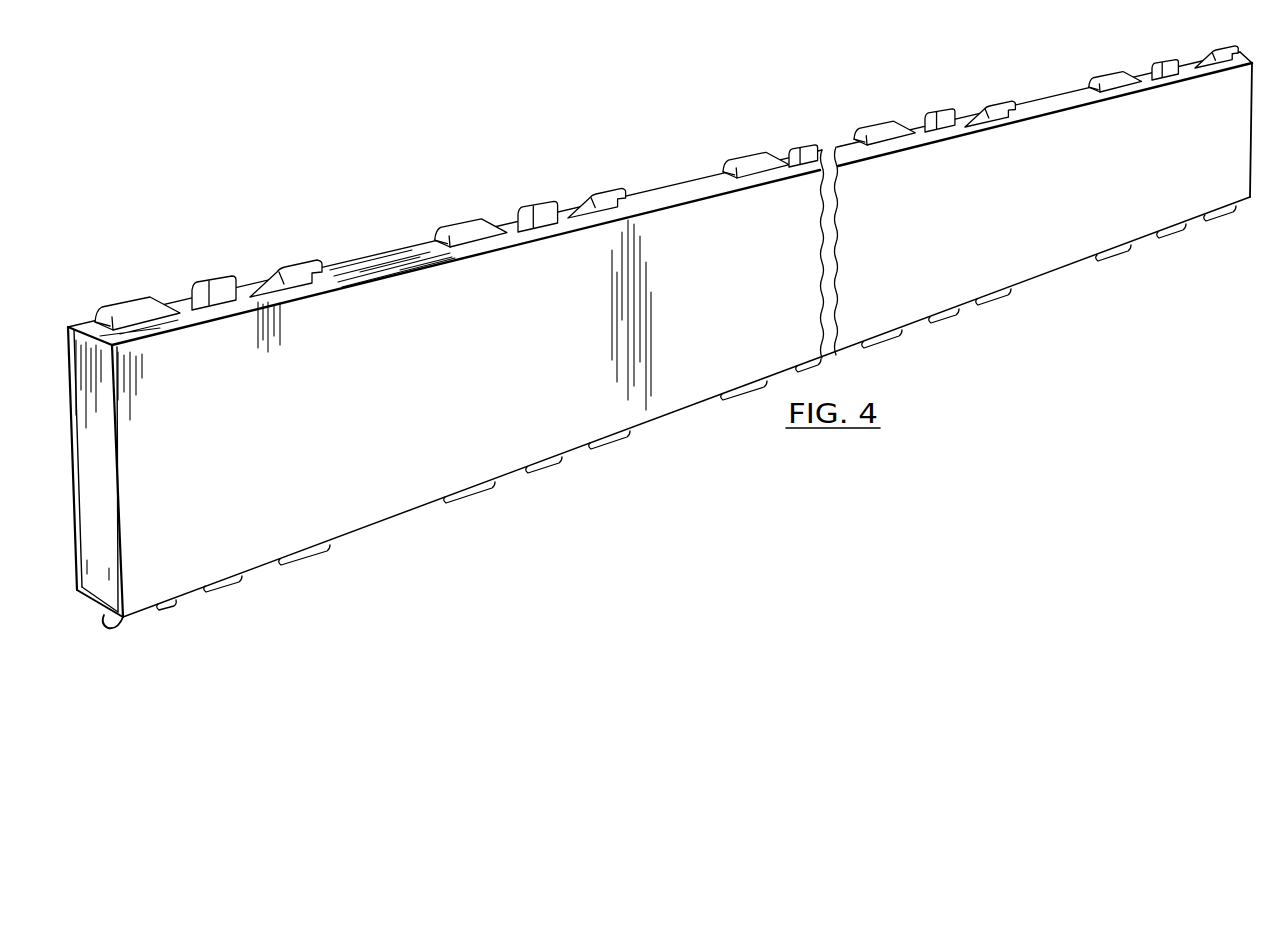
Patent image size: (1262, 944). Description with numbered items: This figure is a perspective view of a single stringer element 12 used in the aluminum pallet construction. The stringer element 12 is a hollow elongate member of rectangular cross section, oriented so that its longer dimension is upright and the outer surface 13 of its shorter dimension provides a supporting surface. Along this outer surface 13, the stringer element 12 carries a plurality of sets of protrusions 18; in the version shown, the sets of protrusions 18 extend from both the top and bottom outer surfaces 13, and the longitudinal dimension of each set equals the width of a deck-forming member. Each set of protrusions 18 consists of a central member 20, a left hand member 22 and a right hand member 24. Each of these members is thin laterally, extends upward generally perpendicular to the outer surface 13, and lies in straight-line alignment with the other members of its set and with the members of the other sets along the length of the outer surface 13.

The stringer element 12 is at (1138, 228).
The outer surface 13 is at (659, 200).
The set of protrusions 18 is at (897, 123).
The central member 20 is at (204, 288).
The left hand member 22 is at (129, 312).
The right hand member 24 is at (280, 271).